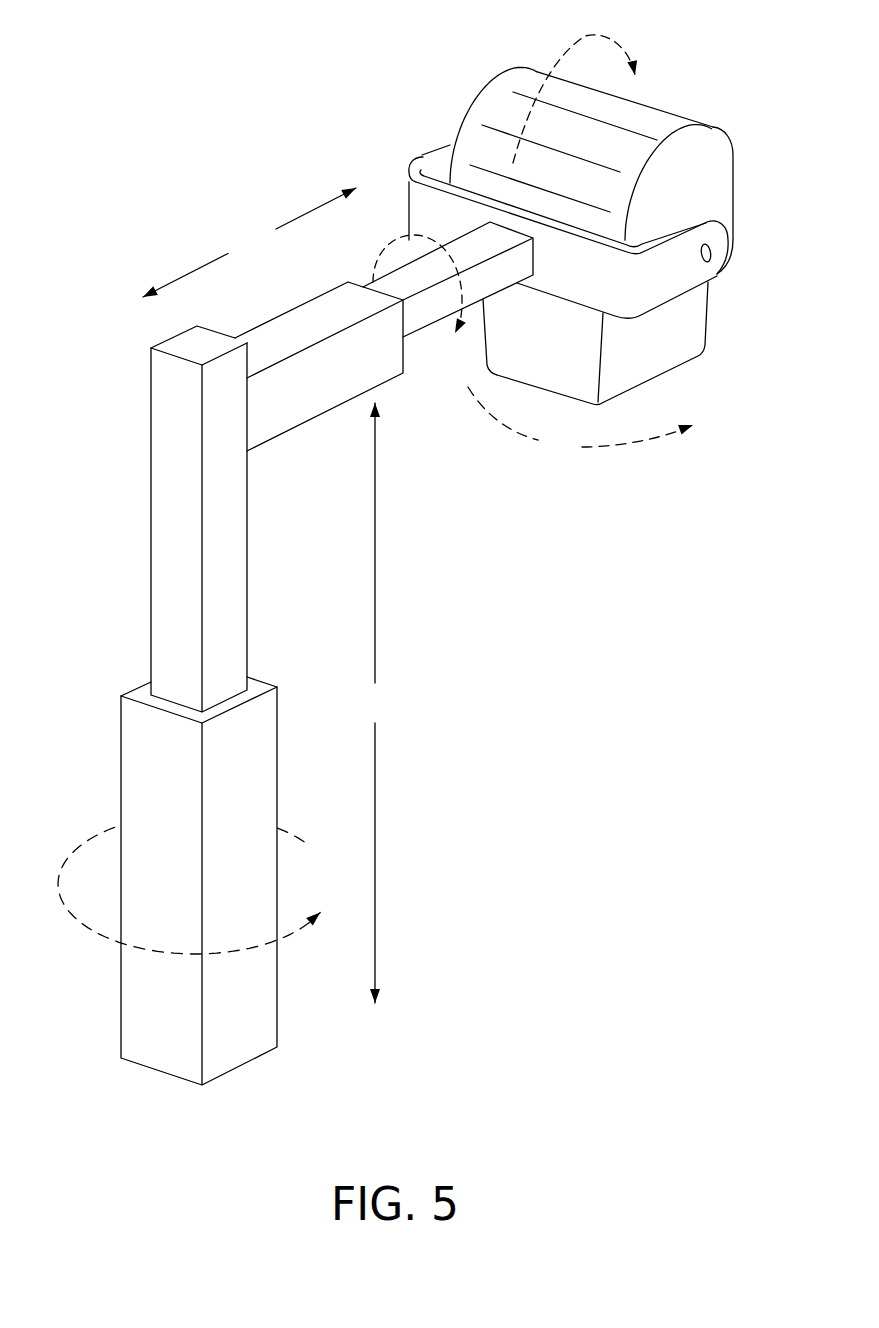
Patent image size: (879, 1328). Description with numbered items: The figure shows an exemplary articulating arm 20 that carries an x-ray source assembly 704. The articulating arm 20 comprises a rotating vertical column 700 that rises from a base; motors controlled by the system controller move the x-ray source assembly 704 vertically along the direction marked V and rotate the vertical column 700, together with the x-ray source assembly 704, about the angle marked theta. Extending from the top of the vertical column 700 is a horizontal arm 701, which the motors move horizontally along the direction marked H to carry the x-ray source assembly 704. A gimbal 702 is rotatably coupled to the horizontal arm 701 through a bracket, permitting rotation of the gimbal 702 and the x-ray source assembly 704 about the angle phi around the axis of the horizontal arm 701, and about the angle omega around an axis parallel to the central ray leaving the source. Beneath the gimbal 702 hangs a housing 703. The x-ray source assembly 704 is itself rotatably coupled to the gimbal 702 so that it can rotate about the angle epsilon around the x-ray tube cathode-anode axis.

The articulating arm 20 is at (180, 127).
The rotating vertical column 700 is at (173, 482).
The horizontal arm 701 is at (288, 327).
The gimbal 702 is at (425, 150).
The housing 703 is at (690, 322).
The x-ray source assembly 704 is at (673, 123).